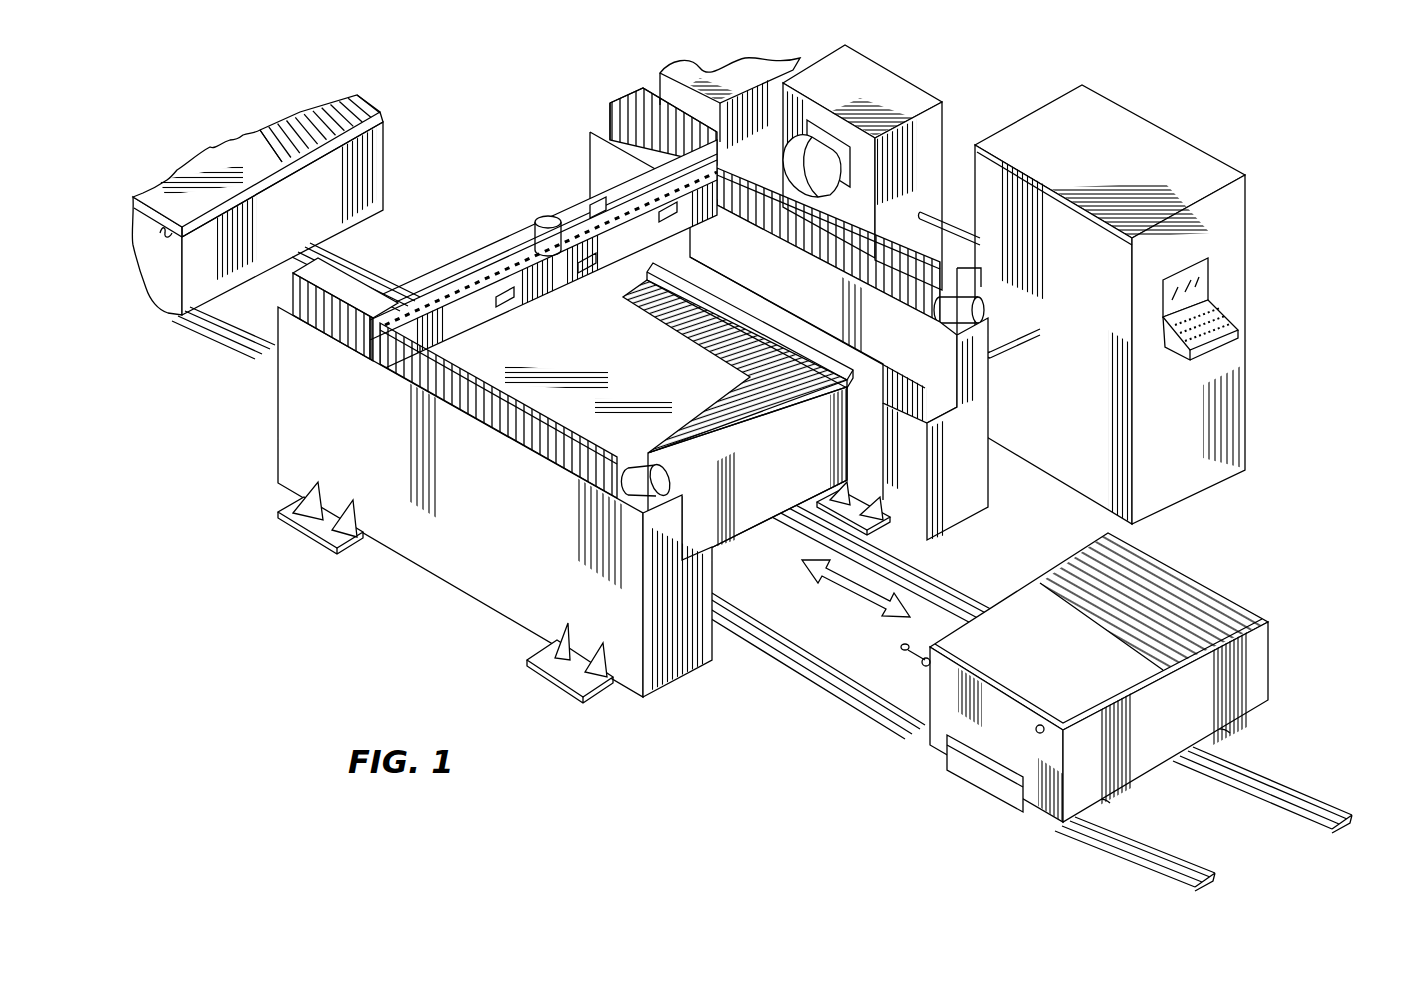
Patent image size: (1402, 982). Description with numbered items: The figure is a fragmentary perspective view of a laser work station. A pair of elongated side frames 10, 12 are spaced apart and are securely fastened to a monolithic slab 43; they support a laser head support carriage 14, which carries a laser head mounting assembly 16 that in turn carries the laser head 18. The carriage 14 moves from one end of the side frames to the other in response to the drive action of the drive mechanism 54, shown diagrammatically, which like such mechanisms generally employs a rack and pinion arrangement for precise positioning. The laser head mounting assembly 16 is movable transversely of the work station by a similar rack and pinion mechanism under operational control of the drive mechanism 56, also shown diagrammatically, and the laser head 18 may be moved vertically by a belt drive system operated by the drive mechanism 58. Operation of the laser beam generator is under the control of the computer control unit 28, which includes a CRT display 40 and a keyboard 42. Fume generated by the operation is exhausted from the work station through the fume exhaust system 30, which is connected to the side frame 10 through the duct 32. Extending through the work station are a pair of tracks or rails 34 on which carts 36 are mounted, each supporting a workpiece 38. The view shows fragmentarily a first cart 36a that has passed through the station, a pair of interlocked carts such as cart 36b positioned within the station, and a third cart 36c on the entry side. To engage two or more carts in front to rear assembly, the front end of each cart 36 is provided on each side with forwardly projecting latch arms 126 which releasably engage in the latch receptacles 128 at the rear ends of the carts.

The side frame 10 is at (950, 484).
The side frame 12 is at (462, 546).
The laser head support carriage 14 is at (461, 268).
The laser head mounting assembly 16 is at (532, 232).
The laser head 18 is at (535, 237).
The computer control unit 28 is at (1254, 239).
The fume exhaust system 30 is at (944, 128).
The duct 32 is at (826, 136).
The tracks or rails 34 is at (952, 586).
The cart 36 is at (383, 167).
The cart 36a is at (702, 290).
The cart 36b is at (743, 489).
The cart 36c is at (1266, 656).
The workpiece 38 is at (645, 367).
The CRT display 40 is at (1215, 290).
The keyboard 42 is at (551, 661).
The monolithic slab 43 is at (752, 717).
The drive mechanism 54 is at (680, 220).
The drive mechanism 56 is at (508, 306).
The drive mechanism 58 is at (597, 205).
The latch arm 126 is at (897, 647).
The latch receptacle 128 is at (1036, 728).